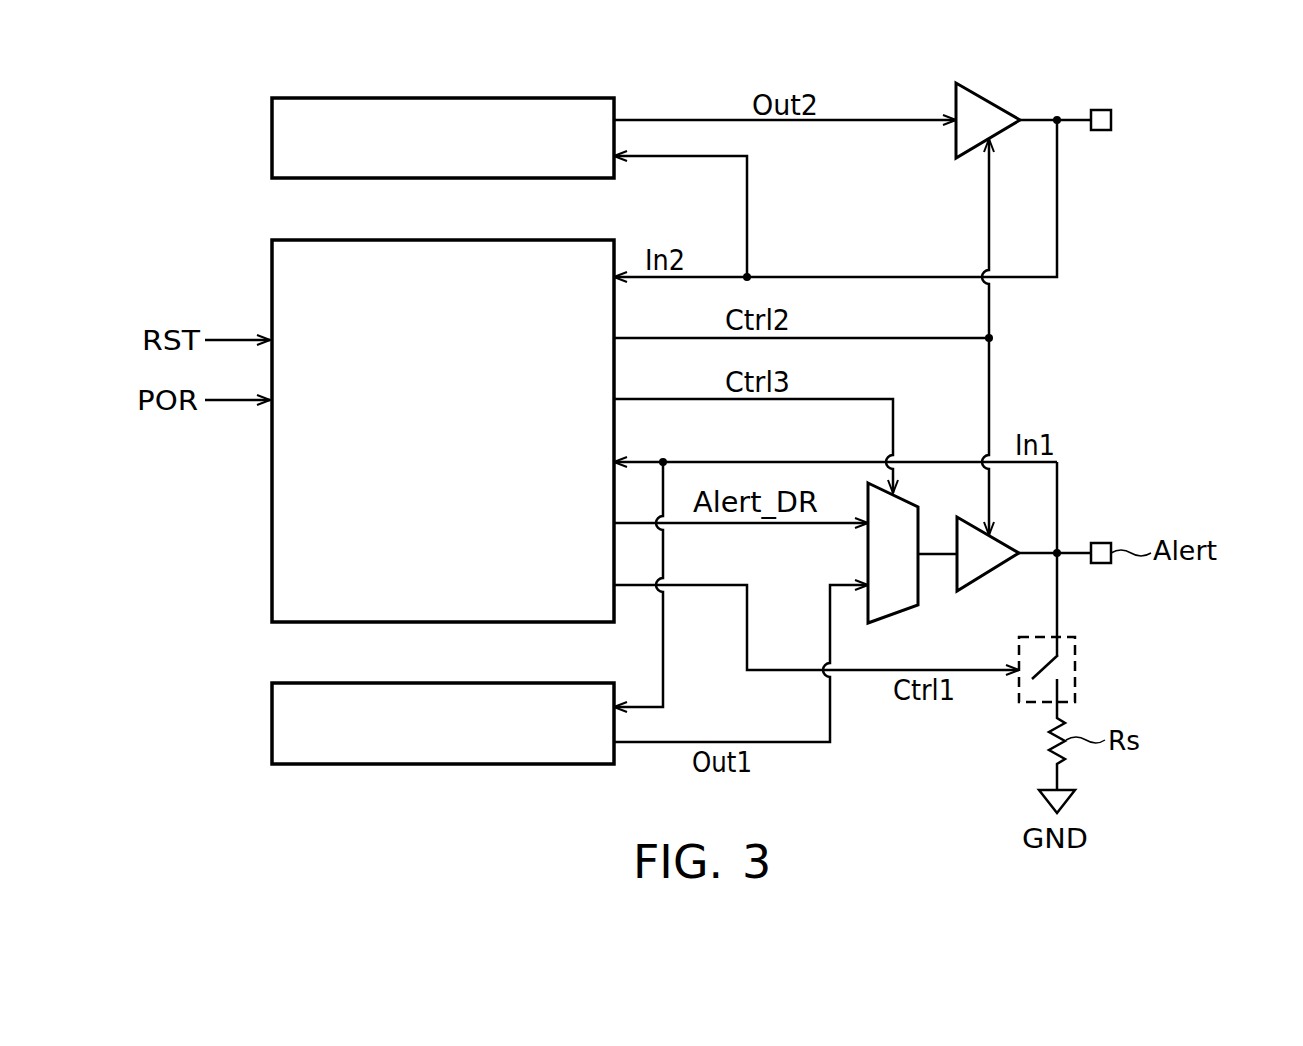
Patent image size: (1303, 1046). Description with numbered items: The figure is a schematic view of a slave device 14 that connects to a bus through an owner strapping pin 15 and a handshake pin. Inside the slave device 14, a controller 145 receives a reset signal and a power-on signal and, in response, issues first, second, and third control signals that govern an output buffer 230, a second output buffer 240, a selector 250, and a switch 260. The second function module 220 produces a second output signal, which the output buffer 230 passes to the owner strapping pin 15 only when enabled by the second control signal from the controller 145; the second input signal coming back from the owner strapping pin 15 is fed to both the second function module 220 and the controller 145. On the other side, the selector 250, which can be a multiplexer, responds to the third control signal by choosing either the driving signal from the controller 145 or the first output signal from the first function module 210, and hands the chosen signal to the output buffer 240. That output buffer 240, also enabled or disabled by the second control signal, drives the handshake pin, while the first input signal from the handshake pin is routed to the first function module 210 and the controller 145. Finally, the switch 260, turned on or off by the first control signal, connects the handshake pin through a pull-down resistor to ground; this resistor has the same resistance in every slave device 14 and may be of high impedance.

The slave device 14 is at (1259, 795).
The owner strapping pin 15 is at (1111, 120).
The controller 145 is at (274, 239).
The first function module 210 is at (274, 682).
The second function module 220 is at (274, 97).
The output buffer 230 is at (990, 102).
The output buffer 240 is at (988, 574).
The selector 250 is at (911, 503).
The switch 260 is at (1076, 670).